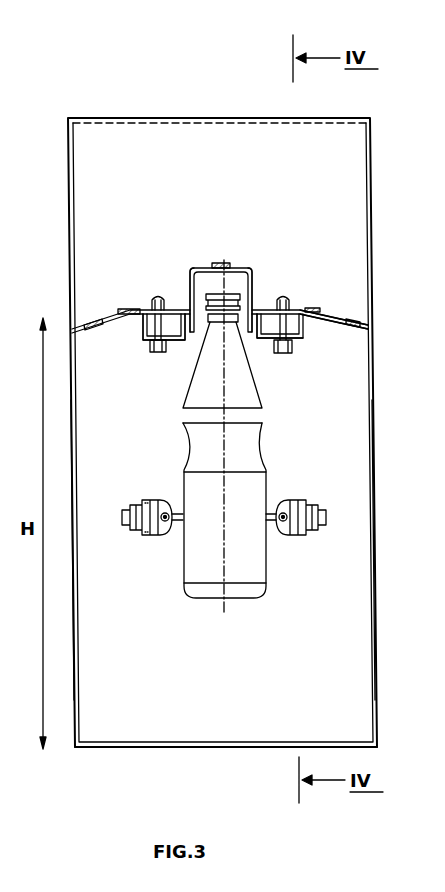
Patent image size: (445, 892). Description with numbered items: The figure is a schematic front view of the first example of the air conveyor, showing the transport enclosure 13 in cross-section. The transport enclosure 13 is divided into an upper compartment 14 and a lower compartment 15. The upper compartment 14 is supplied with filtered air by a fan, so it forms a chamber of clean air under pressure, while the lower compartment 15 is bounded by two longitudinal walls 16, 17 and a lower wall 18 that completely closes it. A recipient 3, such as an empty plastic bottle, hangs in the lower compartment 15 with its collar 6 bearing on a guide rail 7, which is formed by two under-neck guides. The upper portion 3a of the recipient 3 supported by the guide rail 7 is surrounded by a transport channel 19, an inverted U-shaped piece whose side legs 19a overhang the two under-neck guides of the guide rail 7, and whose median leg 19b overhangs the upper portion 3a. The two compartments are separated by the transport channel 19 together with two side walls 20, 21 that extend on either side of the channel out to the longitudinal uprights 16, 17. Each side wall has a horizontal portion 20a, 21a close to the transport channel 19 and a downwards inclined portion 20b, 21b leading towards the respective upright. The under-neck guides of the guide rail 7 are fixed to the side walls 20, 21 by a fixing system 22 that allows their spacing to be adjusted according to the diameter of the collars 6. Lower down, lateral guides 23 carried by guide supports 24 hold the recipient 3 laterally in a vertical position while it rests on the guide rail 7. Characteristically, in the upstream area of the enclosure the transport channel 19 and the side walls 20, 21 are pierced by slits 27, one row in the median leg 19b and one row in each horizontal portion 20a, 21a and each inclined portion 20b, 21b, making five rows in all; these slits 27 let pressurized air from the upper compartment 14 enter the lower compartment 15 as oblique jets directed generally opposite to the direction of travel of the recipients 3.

The recipient 3 is at (264, 490).
The upper portion of recipient 3a is at (186, 296).
The collar 6 is at (259, 300).
The guide rail 7 is at (254, 340).
The transport enclosure 13 is at (108, 118).
The upper compartment 14 is at (174, 169).
The lower compartment 15 is at (226, 671).
The longitudinal wall 16 is at (79, 586).
The longitudinal wall 17 is at (377, 540).
The lower wall 18 is at (233, 748).
The transport channel 19 is at (260, 270).
The side legs of transport channel 19a is at (188, 283).
The median leg of transport channel 19b is at (244, 267).
The side wall 20 is at (146, 302).
The horizontal portion of side wall 20a is at (140, 338).
The downwards inclined portion of side wall 20b is at (96, 333).
The side wall 21 is at (326, 305).
The horizontal portion of side wall 21a is at (322, 325).
The downwards inclined portion of side wall 21b is at (355, 331).
The fixing system 22 is at (285, 357).
The lateral guide 23 is at (176, 522).
The guide support 24 is at (142, 498).
The slit 27 is at (125, 309).